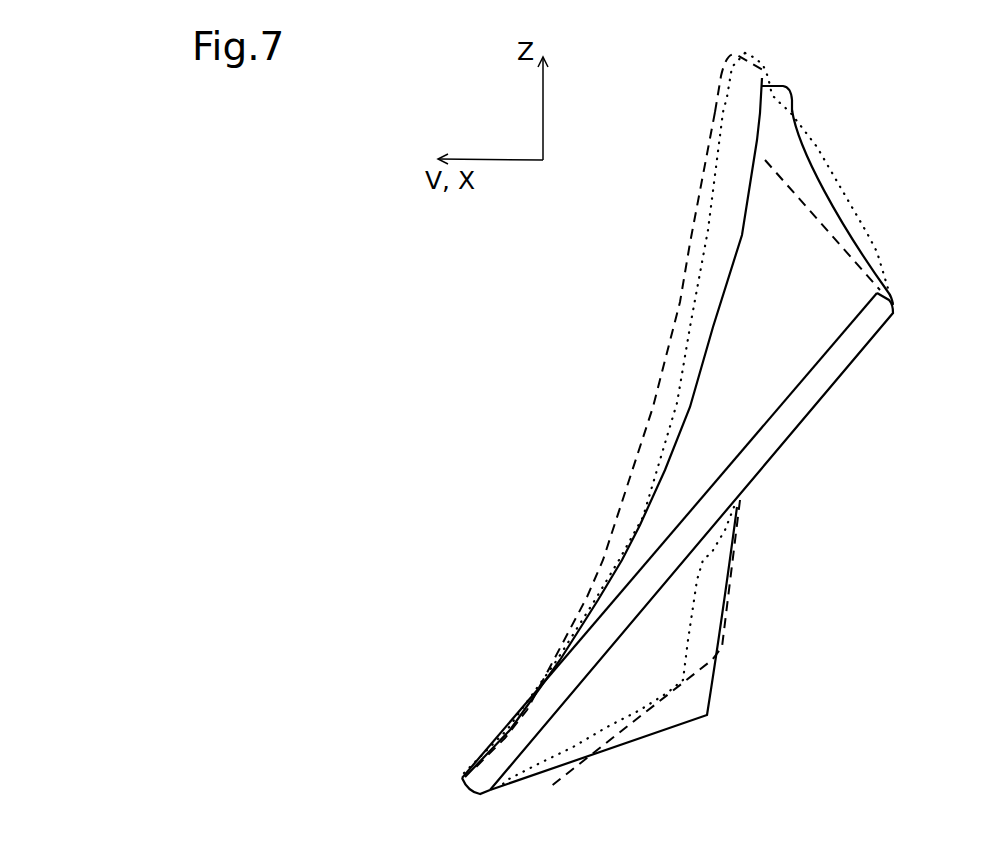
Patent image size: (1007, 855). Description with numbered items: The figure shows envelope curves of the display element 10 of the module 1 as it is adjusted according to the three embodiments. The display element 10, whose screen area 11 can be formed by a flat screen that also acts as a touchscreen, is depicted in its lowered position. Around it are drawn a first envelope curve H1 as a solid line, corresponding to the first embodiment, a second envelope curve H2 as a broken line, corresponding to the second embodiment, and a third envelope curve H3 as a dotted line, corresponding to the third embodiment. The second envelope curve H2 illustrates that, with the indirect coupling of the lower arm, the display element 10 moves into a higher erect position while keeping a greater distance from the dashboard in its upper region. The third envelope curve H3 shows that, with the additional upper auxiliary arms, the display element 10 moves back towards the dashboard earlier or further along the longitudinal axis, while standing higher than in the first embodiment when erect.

The module 1 is at (363, 220).
The display element 10 is at (462, 777).
The screen area 11 is at (785, 397).
The first envelope curve H1 is at (808, 158).
The second envelope curve H2 is at (680, 302).
The third envelope curve H3 is at (872, 242).